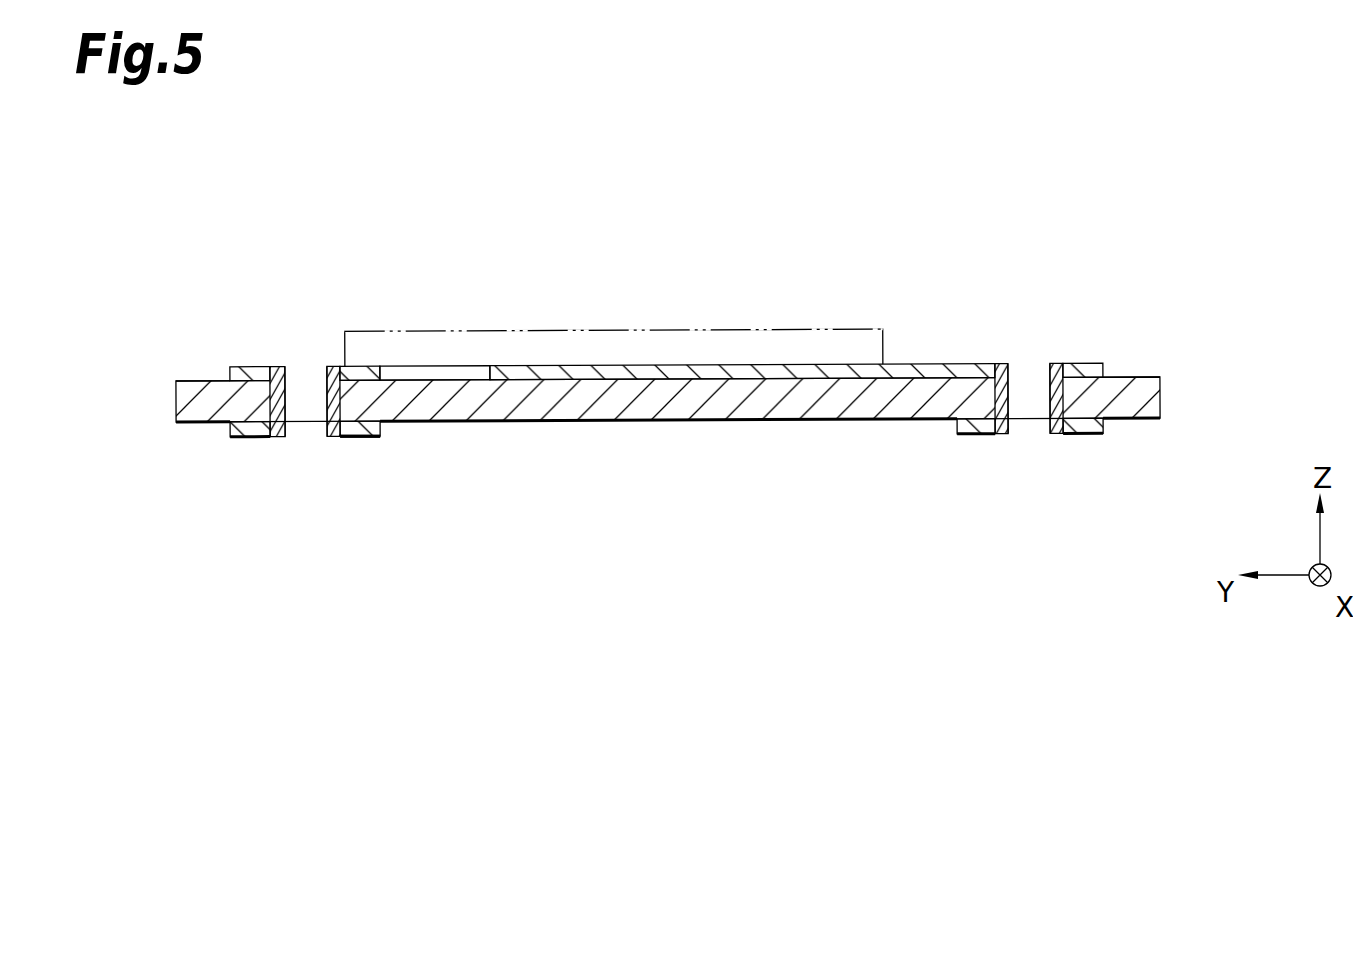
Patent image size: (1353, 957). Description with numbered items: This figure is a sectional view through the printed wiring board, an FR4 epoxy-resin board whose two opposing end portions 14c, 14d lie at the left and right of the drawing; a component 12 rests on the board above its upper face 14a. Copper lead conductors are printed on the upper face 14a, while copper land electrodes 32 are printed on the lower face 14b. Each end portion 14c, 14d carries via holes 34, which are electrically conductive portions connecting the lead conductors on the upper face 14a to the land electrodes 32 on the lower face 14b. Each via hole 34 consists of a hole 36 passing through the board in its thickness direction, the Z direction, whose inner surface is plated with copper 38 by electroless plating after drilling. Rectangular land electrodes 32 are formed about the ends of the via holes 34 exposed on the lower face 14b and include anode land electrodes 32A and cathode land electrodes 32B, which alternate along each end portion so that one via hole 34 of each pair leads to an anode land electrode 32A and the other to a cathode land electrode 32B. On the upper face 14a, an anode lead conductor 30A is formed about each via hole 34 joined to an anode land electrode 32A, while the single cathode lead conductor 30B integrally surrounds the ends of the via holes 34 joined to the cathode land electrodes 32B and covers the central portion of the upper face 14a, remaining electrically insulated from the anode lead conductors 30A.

The substrate 12 is at (593, 328).
The upper face of the board 14a is at (203, 379).
The lower face of the board 14b is at (213, 425).
The end portion of the board 14c is at (188, 403).
The end portion of the board 14d is at (1137, 387).
The anode lead conductor 30A is at (258, 365).
The cathode lead conductor 30B is at (930, 363).
The land electrode 32 is at (667, 435).
The anode land electrode 32A is at (360, 437).
The cathode land electrode 32B is at (972, 435).
The via hole 34 is at (318, 348).
The hole 36 is at (1017, 433).
The copper 38 is at (1060, 365).